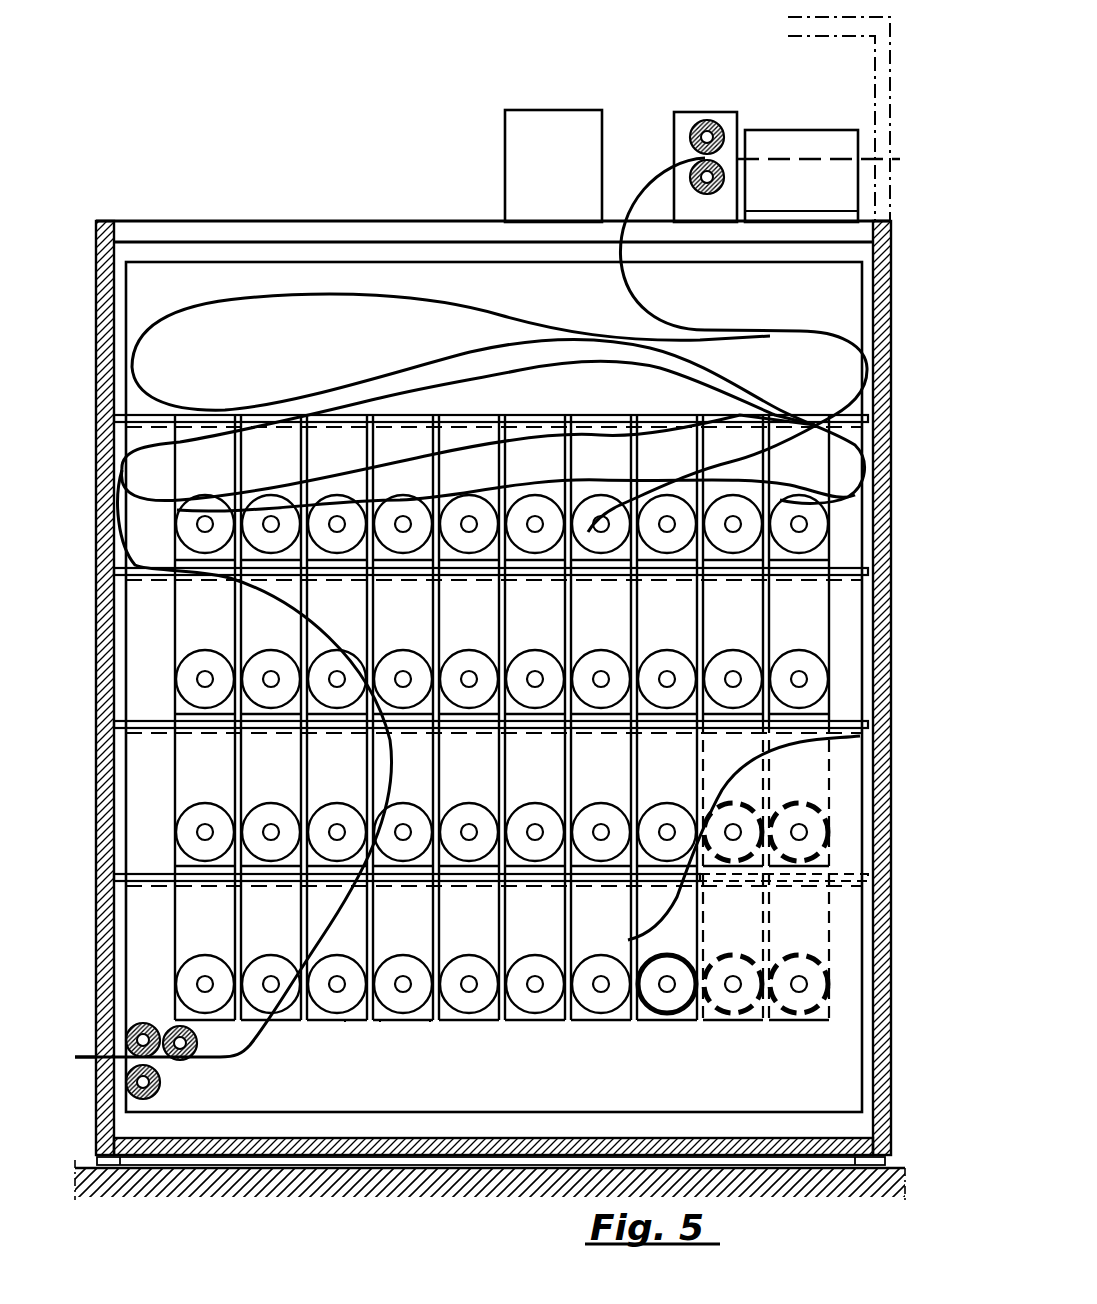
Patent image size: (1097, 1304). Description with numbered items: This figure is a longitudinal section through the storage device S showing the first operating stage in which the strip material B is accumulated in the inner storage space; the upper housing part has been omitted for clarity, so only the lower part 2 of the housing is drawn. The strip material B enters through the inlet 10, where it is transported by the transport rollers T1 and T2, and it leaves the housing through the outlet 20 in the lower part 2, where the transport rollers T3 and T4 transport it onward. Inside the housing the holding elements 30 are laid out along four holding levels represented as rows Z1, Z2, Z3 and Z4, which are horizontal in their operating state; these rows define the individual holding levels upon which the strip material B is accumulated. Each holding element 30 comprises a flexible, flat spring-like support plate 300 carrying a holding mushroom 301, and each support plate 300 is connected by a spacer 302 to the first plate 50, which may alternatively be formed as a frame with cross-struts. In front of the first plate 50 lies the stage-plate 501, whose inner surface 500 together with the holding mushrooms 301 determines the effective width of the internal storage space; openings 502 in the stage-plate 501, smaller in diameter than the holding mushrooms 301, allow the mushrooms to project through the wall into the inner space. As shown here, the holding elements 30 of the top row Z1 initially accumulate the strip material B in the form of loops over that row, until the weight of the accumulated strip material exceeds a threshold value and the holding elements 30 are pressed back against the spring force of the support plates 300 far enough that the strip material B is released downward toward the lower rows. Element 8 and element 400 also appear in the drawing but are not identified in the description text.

The lower part of the housing 2 is at (178, 220).
The drive unit 8 is at (515, 142).
The inlet 10 is at (886, 158).
The outlet 20 is at (90, 1062).
The holding elements 30 is at (432, 1022).
The first plate 50 is at (358, 284).
The support plate 300 is at (575, 1070).
The holding mushroom 301 is at (403, 516).
The spacer 302 is at (152, 418).
The storage container 400 is at (494, 687).
The inner surface 500 is at (660, 938).
The stage-plate 501 is at (766, 870).
The openings 502 is at (730, 808).
The storage device S is at (233, 165).
The strip material B is at (790, 157).
The transport roller T1 is at (716, 128).
The transport roller T2 is at (690, 196).
The transport roller T3 is at (161, 1084).
The transport roller T4 is at (143, 1022).
The row of holding elements Z1 is at (830, 507).
The row of holding elements Z2 is at (830, 658).
The row of holding elements Z3 is at (828, 810).
The row of holding elements Z4 is at (828, 963).